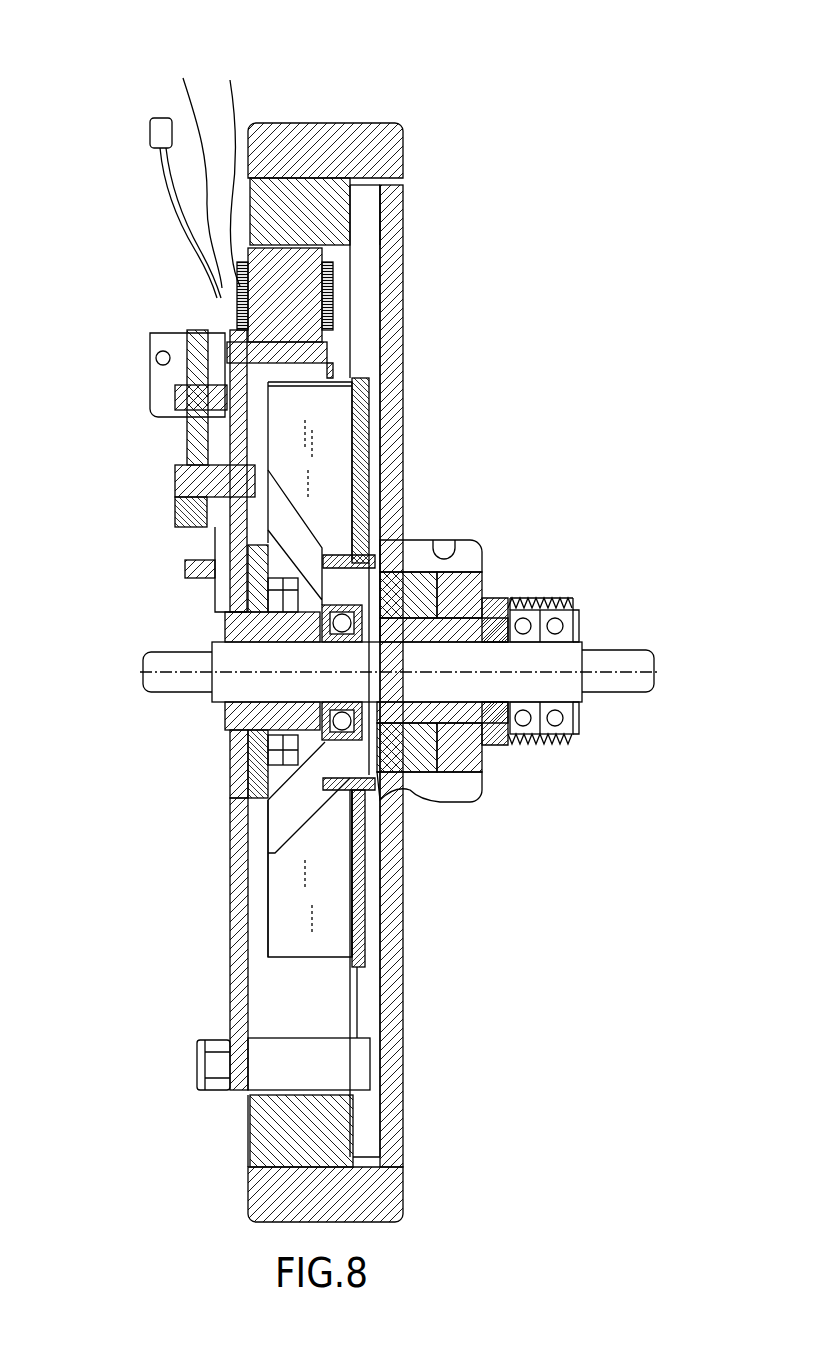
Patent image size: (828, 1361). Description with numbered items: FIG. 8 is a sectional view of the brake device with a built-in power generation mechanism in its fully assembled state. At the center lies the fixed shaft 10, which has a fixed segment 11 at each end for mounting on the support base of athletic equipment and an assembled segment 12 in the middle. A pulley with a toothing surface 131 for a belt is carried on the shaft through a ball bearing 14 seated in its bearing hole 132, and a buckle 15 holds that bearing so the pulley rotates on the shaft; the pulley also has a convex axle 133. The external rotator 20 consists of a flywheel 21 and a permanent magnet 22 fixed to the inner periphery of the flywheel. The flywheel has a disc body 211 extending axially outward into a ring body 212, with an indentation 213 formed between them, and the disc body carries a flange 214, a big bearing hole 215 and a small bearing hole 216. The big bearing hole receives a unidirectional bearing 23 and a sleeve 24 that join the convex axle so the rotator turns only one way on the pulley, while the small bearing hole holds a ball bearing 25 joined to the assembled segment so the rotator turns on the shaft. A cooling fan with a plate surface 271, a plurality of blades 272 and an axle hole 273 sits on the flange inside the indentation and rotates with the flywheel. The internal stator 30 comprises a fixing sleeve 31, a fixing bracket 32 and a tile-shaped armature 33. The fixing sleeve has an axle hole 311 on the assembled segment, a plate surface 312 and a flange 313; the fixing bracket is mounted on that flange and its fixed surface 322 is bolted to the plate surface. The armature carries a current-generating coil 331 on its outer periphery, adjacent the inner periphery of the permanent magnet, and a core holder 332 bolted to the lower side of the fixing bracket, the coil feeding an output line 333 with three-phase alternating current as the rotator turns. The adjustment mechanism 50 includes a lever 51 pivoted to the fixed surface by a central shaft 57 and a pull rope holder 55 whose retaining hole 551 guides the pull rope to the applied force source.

The fixed shaft 10 is at (375, 670).
The fixed segment 11 is at (175, 662).
The assembled segment 12 is at (220, 685).
The ball bearing 14 is at (574, 608).
The buckle 15 is at (580, 632).
The external rotator 20 is at (397, 644).
The flywheel 21 is at (392, 150).
The permanent magnet 22 is at (365, 212).
The unidirectional bearing 23 is at (420, 800).
The sleeve 24 is at (465, 800).
The ball bearing 25 is at (362, 830).
The internal stator 30 is at (213, 310).
The fixing sleeve 31 is at (238, 640).
The fixing bracket 32 is at (252, 600).
The tile-shaped armature 33 is at (180, 151).
The adjustment mechanism 50 is at (135, 471).
The lever 51 is at (166, 538).
The pull rope holder 55 is at (160, 408).
The central shaft 57 is at (185, 477).
The toothing surface 131 is at (556, 600).
The bearing hole 132 is at (545, 745).
The convex axle 133 is at (500, 600).
The disc body 211 is at (392, 285).
The ring body 212 is at (312, 190).
The indentation 213 is at (372, 190).
The flange 214 is at (458, 540).
The big bearing hole 215 is at (490, 603).
The small bearing hole 216 is at (345, 598).
The plate surface 271 is at (362, 395).
The blades 272 is at (335, 455).
The axle hole 273 is at (355, 880).
The axle hole 311 is at (240, 720).
The plate surface 312 is at (300, 780).
The flange 313 is at (238, 760).
The fixed surface 322 is at (232, 975).
The current-generating coil 331 is at (230, 171).
The core holder 332 is at (192, 169).
The output line 333 is at (166, 125).
The retaining hole 551 is at (153, 367).